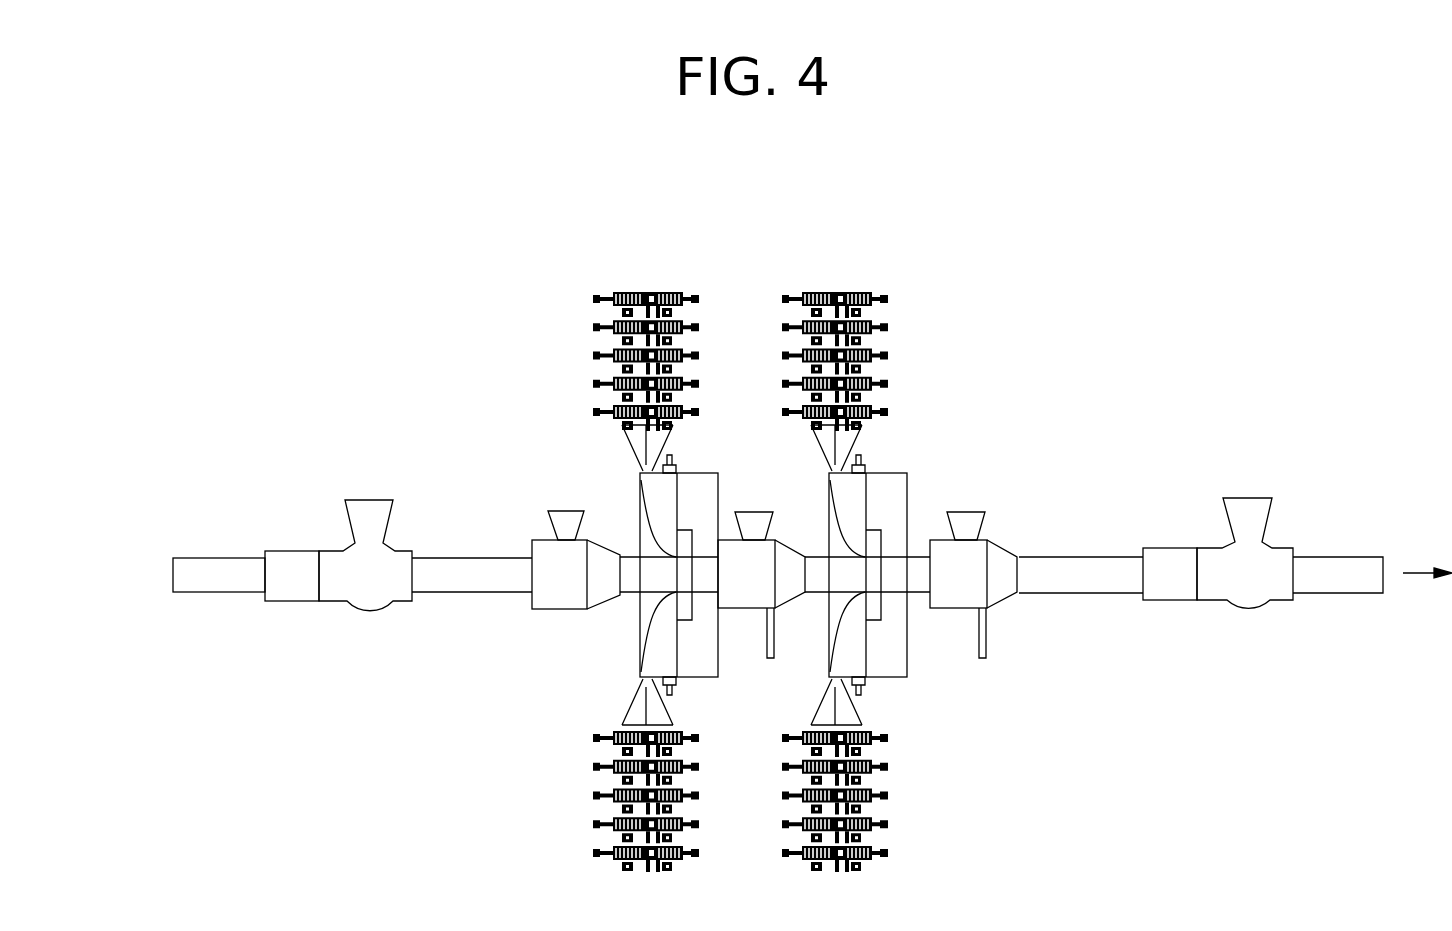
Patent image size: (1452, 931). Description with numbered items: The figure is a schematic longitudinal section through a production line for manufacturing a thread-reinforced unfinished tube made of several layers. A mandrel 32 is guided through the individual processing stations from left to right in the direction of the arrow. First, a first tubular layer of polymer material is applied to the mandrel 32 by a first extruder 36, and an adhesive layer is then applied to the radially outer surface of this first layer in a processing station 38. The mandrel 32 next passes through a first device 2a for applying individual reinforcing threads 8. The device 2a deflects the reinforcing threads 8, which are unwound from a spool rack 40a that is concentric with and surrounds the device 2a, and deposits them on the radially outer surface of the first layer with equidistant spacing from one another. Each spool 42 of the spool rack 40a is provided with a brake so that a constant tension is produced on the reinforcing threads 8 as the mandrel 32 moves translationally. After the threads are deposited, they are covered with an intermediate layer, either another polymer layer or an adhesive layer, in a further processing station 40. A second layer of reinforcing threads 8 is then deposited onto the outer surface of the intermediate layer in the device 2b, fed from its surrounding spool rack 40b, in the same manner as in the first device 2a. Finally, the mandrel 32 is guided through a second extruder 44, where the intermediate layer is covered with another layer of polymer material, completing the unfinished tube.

The mandrel 32 is at (202, 580).
The first extruder 36 is at (368, 500).
The processing station 38 is at (563, 510).
The first device 2a is at (640, 490).
The device 2b is at (867, 500).
The spool rack 40a is at (663, 292).
The spool rack 40b is at (847, 292).
The spool 42 is at (700, 412).
The reinforcing threads 8 is at (635, 695).
The processing station 40 is at (745, 588).
The second extruder 44 is at (1268, 543).